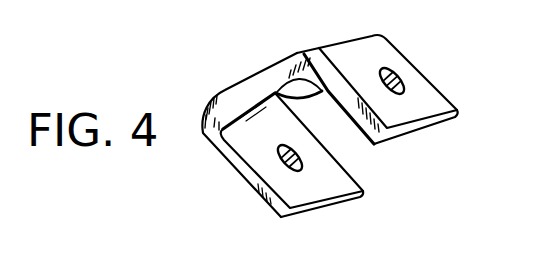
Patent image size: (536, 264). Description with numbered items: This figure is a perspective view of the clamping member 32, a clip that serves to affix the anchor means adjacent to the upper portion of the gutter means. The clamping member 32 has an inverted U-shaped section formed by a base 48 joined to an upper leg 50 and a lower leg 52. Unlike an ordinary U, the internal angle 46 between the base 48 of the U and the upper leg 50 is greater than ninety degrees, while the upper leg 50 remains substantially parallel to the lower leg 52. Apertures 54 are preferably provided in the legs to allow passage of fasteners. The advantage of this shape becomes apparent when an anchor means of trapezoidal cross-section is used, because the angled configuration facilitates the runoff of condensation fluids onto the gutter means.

The clamping member 32 is at (342, 134).
The internal angle 46 is at (299, 103).
The base 48 is at (244, 87).
The upper leg 50 is at (438, 106).
The lower leg 52 is at (265, 205).
The apertures 54 is at (400, 81).